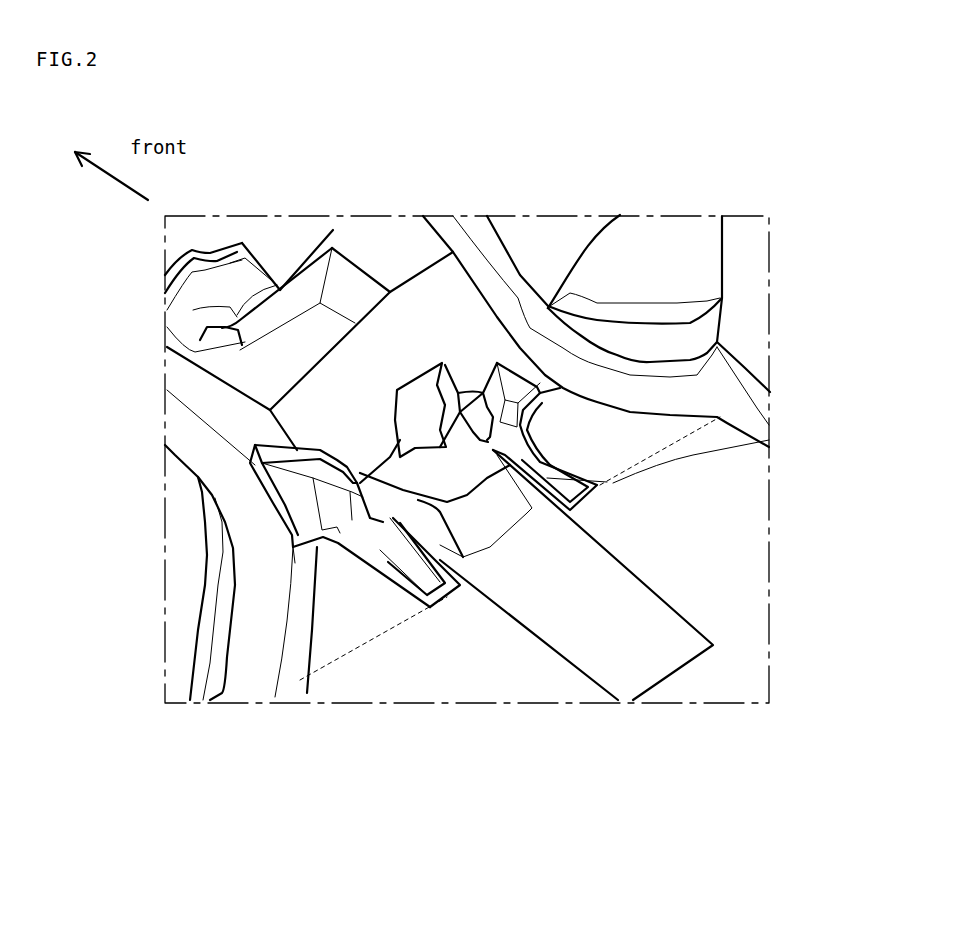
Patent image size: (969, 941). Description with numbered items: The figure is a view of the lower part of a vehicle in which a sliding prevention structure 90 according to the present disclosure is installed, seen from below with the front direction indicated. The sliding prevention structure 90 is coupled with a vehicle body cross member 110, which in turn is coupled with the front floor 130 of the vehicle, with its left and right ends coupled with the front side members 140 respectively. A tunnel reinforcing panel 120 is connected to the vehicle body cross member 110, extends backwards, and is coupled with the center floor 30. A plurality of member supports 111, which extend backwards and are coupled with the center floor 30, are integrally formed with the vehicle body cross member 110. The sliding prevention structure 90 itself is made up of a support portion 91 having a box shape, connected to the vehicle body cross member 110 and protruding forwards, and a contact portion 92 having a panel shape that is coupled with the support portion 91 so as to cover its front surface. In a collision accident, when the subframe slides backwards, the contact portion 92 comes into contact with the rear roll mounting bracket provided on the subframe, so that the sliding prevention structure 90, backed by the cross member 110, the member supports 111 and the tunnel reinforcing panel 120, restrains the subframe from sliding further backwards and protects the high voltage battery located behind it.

The center floor 30 is at (740, 518).
The sliding prevention structure 90 is at (392, 415).
The support portion 91 is at (451, 393).
The contact portion 92 is at (418, 407).
The vehicle body cross member 110 is at (370, 483).
The member supports 111 is at (700, 458).
The tunnel reinforcing panel 120 is at (582, 648).
The front floor 130 is at (360, 600).
The front side members 140 is at (487, 275).